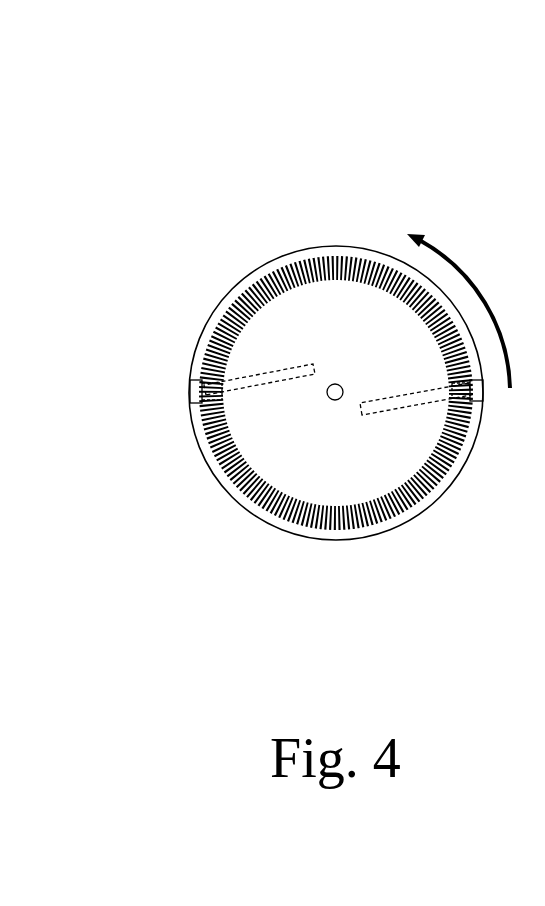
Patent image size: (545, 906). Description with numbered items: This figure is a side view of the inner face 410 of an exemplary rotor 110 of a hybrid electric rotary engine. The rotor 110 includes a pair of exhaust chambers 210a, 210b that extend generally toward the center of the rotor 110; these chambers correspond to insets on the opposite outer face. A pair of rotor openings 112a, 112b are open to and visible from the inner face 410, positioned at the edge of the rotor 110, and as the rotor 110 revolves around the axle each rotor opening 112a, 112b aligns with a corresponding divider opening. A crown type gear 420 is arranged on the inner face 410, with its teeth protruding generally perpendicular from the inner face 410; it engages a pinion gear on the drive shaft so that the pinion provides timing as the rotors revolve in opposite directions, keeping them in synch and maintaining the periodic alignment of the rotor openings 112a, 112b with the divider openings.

The rotor 110 is at (325, 92).
The crown type gear 420 is at (340, 240).
The inner face 410 is at (350, 488).
The exhaust chamber 210a is at (428, 403).
The exhaust chamber 210b is at (257, 374).
The rotor opening 112a is at (483, 403).
The rotor opening 112b is at (193, 403).